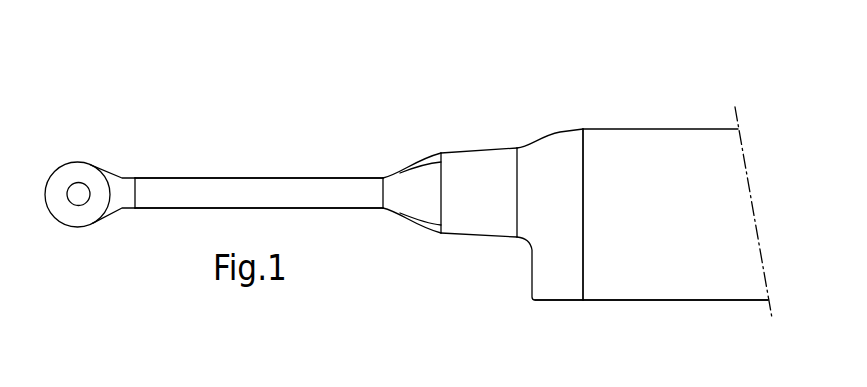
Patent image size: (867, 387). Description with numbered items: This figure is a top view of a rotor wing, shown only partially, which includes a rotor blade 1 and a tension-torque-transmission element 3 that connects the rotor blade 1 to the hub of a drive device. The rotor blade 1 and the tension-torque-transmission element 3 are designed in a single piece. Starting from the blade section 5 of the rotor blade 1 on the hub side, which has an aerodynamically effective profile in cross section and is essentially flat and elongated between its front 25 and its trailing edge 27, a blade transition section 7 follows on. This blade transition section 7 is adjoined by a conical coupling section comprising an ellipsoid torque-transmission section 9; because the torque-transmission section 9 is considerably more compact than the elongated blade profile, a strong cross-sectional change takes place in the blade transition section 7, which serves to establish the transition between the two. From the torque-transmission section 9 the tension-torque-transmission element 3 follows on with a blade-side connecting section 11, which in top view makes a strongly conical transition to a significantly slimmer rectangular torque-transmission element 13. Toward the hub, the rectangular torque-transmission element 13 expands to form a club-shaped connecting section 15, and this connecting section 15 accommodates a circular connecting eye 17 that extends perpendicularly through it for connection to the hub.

The rotor blade 1 is at (660, 77).
The tension-torque-transmission element 3 is at (279, 156).
The blade section 5 is at (680, 136).
The blade transition section 7 is at (552, 146).
The torque-transmission section 9 is at (488, 157).
The blade-side connecting section 11 is at (420, 174).
The rectangular torque-transmission element 13 is at (222, 184).
The club-shaped connecting section 15 is at (121, 184).
The circular connecting eye 17 is at (82, 183).
The front 25 is at (625, 130).
The trailing edge 27 is at (610, 300).